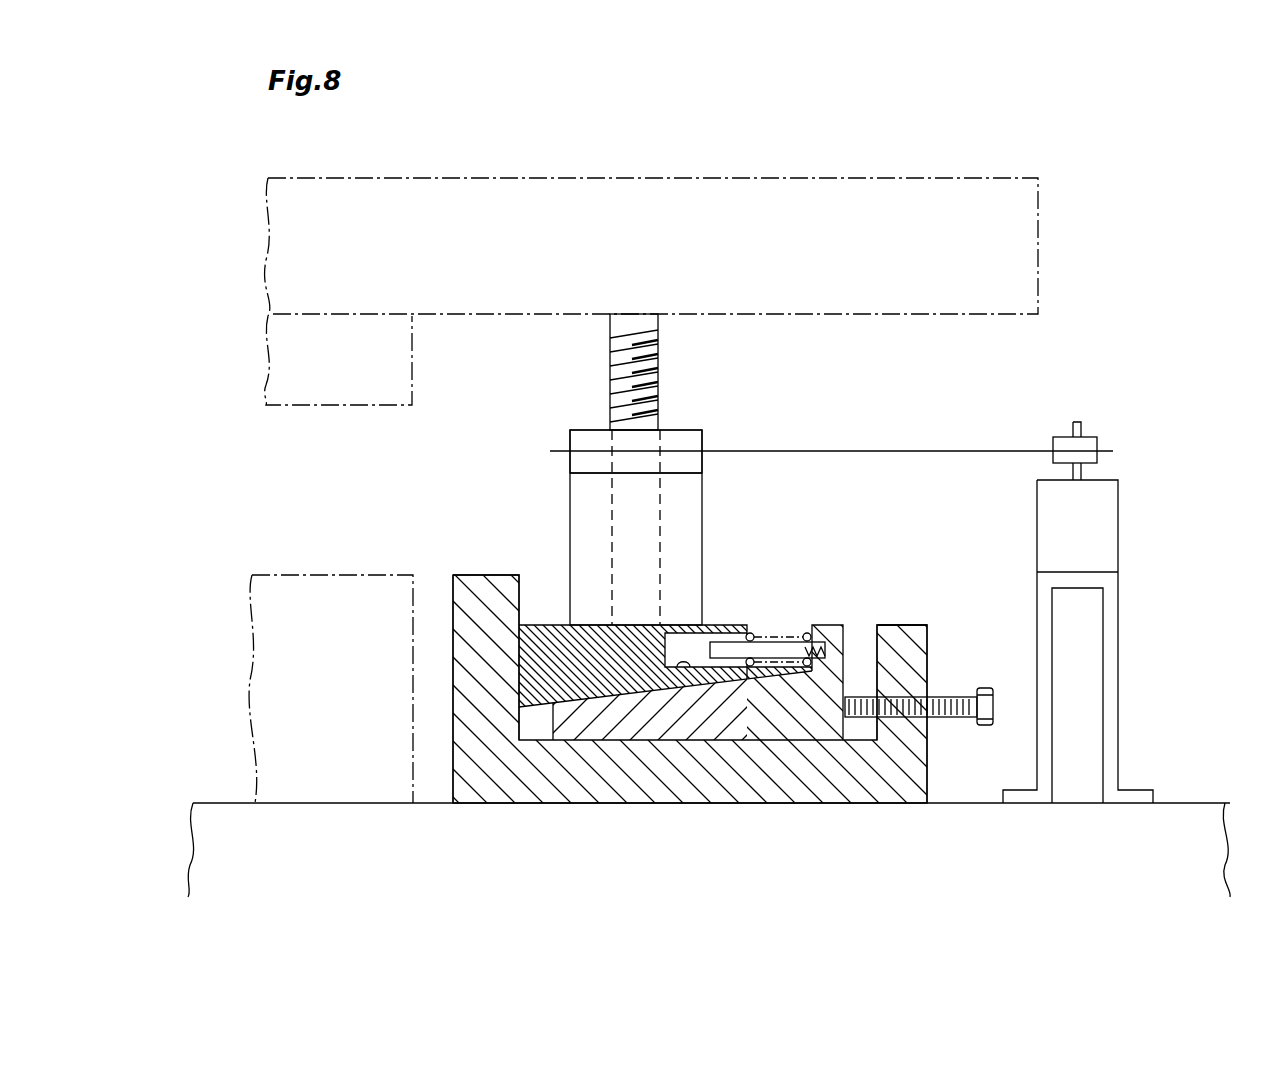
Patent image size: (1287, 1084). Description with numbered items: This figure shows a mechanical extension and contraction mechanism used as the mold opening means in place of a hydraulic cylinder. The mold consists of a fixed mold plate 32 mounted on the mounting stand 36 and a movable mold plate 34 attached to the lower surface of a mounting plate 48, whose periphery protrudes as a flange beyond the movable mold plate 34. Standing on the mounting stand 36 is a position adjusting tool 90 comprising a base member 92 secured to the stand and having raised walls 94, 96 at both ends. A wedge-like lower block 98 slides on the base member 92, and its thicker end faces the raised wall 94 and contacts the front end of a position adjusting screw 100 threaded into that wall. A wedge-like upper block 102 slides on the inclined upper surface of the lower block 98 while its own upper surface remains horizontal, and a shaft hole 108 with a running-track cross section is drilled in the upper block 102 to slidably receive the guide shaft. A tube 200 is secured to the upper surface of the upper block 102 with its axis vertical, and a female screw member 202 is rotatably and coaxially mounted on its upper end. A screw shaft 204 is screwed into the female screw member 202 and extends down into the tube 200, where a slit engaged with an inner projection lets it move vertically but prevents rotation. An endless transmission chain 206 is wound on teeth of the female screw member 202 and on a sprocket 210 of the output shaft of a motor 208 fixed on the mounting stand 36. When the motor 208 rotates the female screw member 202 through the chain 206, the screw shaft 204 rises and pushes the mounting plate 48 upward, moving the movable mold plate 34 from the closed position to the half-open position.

The fixed mold plate 32 is at (340, 600).
The movable mold plate 34 is at (395, 365).
The mounting stand 36 is at (1190, 805).
The mounting plate 48 is at (1013, 237).
The position adjusting tool 90 is at (907, 608).
The base member 92 is at (650, 777).
The raised wall 94 is at (915, 648).
The raised wall 96 is at (487, 580).
The lower block 98 is at (793, 727).
The position adjusting screw 100 is at (955, 698).
The upper block 102 is at (583, 678).
The shaft hole 108 is at (700, 683).
The tube 200 is at (582, 513).
The female screw member 202 is at (687, 437).
The screw shaft 204 is at (655, 357).
The transmission chain 206 is at (858, 455).
The motor 208 is at (1098, 516).
The sprocket 210 is at (1088, 432).